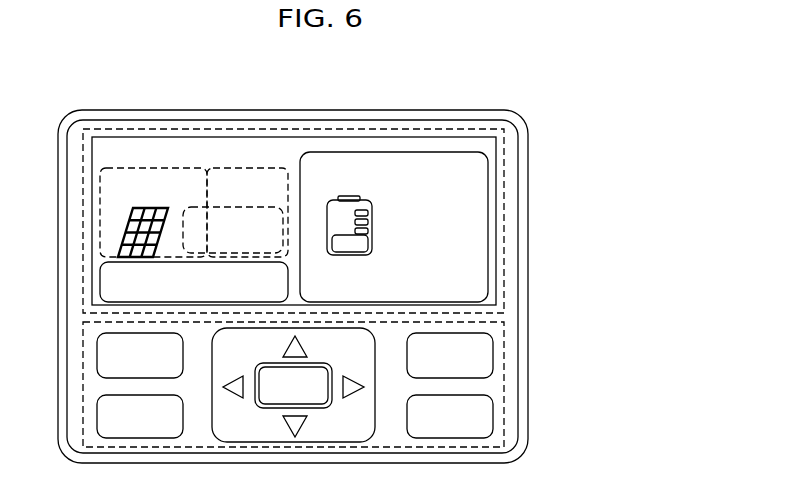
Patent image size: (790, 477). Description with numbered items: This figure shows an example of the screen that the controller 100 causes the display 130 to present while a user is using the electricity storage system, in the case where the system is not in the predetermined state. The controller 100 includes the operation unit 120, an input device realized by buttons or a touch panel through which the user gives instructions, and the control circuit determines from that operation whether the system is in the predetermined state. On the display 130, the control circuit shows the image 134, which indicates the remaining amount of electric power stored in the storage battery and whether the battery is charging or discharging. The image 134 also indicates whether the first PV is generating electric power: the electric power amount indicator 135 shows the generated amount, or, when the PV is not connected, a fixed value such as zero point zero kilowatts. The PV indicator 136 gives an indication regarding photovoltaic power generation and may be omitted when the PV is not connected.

The controller 100 is at (528, 91).
The operation unit 120 is at (505, 320).
The display 130 is at (388, 128).
The image 134 is at (486, 149).
The electric power amount indicator 135 is at (199, 166).
The PV indicator 136 is at (262, 166).